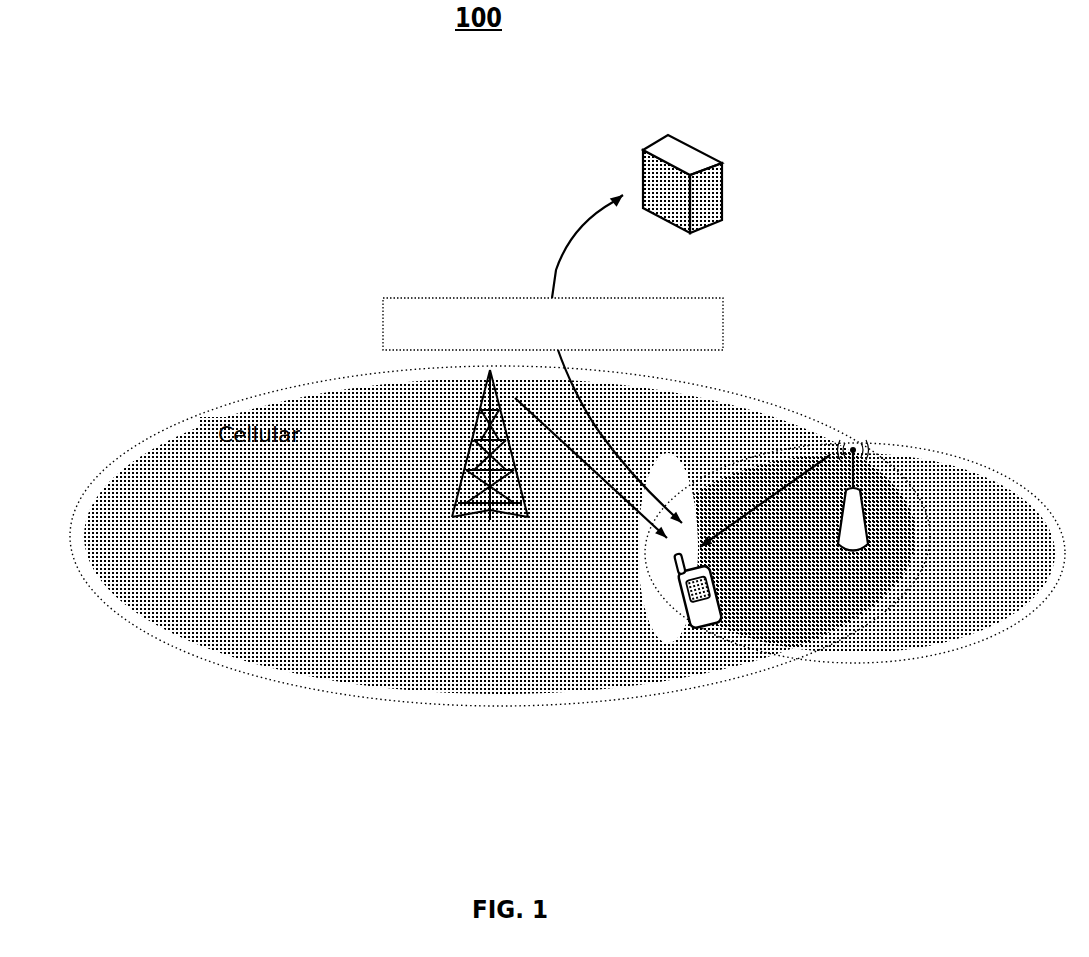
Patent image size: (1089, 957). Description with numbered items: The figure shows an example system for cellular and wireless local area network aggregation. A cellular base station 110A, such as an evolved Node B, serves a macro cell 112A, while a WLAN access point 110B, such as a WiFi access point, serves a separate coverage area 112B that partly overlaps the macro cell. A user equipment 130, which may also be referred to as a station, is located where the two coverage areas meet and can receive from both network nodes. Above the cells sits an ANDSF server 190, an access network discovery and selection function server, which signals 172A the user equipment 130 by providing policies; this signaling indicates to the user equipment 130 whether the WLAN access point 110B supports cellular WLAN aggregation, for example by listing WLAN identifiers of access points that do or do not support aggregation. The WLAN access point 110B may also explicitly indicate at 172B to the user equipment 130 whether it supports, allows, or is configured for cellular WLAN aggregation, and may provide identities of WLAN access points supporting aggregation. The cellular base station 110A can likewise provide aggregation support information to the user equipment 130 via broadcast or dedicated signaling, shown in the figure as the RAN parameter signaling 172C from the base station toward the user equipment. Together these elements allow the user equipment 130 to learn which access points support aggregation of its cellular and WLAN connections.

The ANDSF server 190 is at (668, 148).
The signaling 172A is at (565, 246).
The cellular base station 110A is at (458, 510).
The WLAN access point 110B is at (848, 447).
The macro cell 112A is at (333, 692).
The coverage area 112B is at (860, 657).
The user equipment 130 is at (690, 600).
The explicit indication 172B is at (716, 550).
The RAN parameters 172C is at (662, 539).